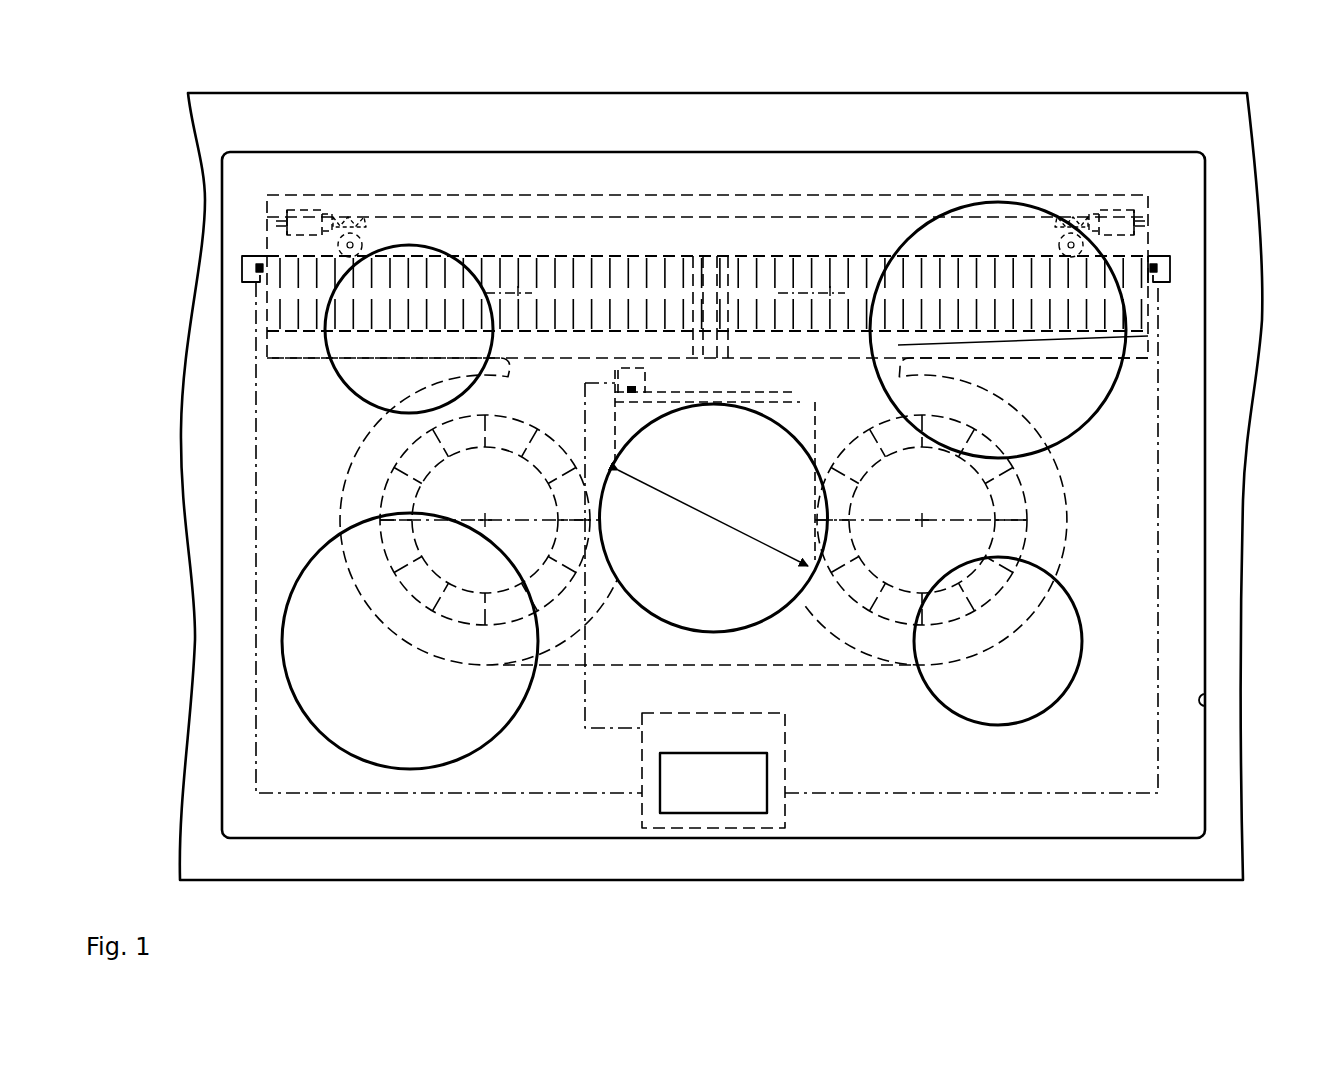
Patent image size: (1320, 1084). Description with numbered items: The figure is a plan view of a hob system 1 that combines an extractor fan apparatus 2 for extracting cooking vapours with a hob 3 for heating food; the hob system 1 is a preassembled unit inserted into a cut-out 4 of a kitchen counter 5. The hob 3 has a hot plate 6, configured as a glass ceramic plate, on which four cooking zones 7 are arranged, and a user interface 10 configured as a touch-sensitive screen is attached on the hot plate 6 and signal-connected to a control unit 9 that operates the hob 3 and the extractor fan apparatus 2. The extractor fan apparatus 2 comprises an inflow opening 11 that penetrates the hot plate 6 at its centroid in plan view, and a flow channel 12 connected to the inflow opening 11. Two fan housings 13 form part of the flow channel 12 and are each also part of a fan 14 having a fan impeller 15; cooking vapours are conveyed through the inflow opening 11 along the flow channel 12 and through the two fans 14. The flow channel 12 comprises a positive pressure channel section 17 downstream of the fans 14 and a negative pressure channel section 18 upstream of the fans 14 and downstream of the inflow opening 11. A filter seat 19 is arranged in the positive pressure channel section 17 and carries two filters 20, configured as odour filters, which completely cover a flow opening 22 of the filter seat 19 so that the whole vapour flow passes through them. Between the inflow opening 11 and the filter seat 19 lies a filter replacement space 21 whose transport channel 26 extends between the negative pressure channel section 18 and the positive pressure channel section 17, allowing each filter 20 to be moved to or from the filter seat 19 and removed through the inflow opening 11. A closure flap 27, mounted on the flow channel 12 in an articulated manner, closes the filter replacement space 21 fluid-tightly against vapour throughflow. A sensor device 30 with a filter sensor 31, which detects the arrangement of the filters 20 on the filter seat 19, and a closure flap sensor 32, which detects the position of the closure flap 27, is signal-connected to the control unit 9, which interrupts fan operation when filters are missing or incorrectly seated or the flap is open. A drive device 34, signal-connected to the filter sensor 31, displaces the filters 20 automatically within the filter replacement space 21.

The hob system 1 is at (632, 866).
The extractor fan apparatus 2 is at (1062, 522).
The hob 3 is at (208, 459).
The cut-out 4 is at (1212, 700).
The kitchen counter 5 is at (893, 863).
The hot plate 6 is at (1188, 482).
The cooking zones 7 is at (328, 336).
The control unit 9 is at (755, 828).
The user interface 10 is at (708, 800).
The inflow opening 11 is at (713, 406).
The flow channel 12 is at (852, 393).
The fan housings 13 is at (1057, 460).
The fans 14 is at (327, 497).
The fan impeller 15 is at (1025, 550).
The positive pressure channel section 17 is at (1148, 336).
The negative pressure channel section 18 is at (647, 597).
The filter seat 19 is at (1030, 257).
The filters 20 is at (1004, 248).
The filter replacement space 21 is at (660, 383).
The flow opening 22 is at (530, 255).
The transport channel 26 is at (803, 413).
The closure flap 27 is at (795, 393).
The sensor device 30 is at (1167, 240).
The filter sensor 31 is at (256, 268).
The closure flap sensor 32 is at (632, 370).
The drive device 34 is at (302, 208).